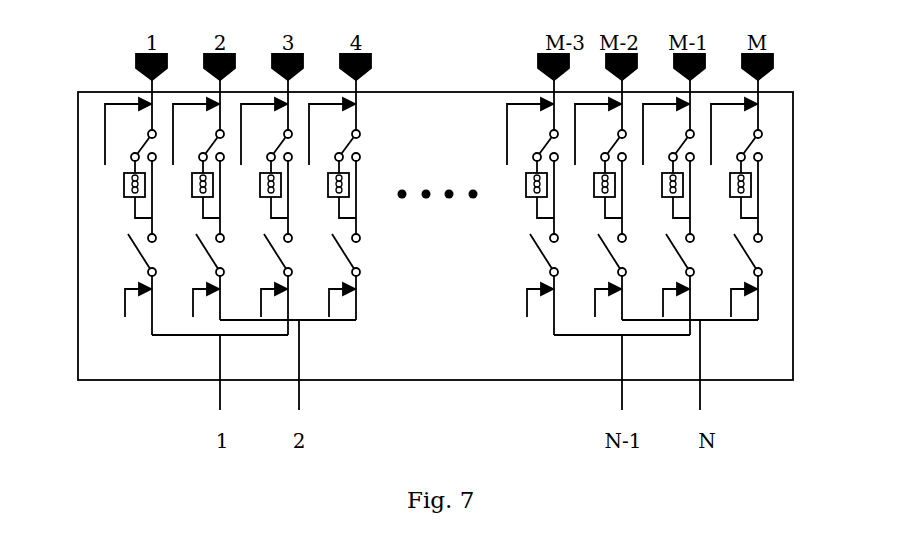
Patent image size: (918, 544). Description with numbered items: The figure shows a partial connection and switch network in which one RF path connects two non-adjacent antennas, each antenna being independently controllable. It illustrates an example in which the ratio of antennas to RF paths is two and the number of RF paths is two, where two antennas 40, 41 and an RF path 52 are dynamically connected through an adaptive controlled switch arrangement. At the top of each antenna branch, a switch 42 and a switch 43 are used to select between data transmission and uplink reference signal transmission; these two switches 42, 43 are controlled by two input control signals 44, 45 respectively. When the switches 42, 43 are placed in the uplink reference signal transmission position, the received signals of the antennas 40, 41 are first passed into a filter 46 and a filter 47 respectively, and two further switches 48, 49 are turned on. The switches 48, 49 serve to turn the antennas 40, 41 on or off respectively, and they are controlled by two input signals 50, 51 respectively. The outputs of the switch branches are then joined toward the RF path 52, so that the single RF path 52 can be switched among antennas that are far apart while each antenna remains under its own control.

The antenna 40 is at (441, 219).
The antenna 41 is at (738, 92).
The switch 42 is at (764, 145).
The switch 43 is at (669, 145).
The input control signal 44 is at (734, 124).
The input control signal 45 is at (666, 125).
The filter 46 is at (725, 189).
The filter 47 is at (657, 189).
The switch 48 is at (763, 255).
The switch 49 is at (693, 255).
The input signal 50 is at (728, 300).
The input signal 51 is at (661, 300).
The RF path 52 is at (713, 365).